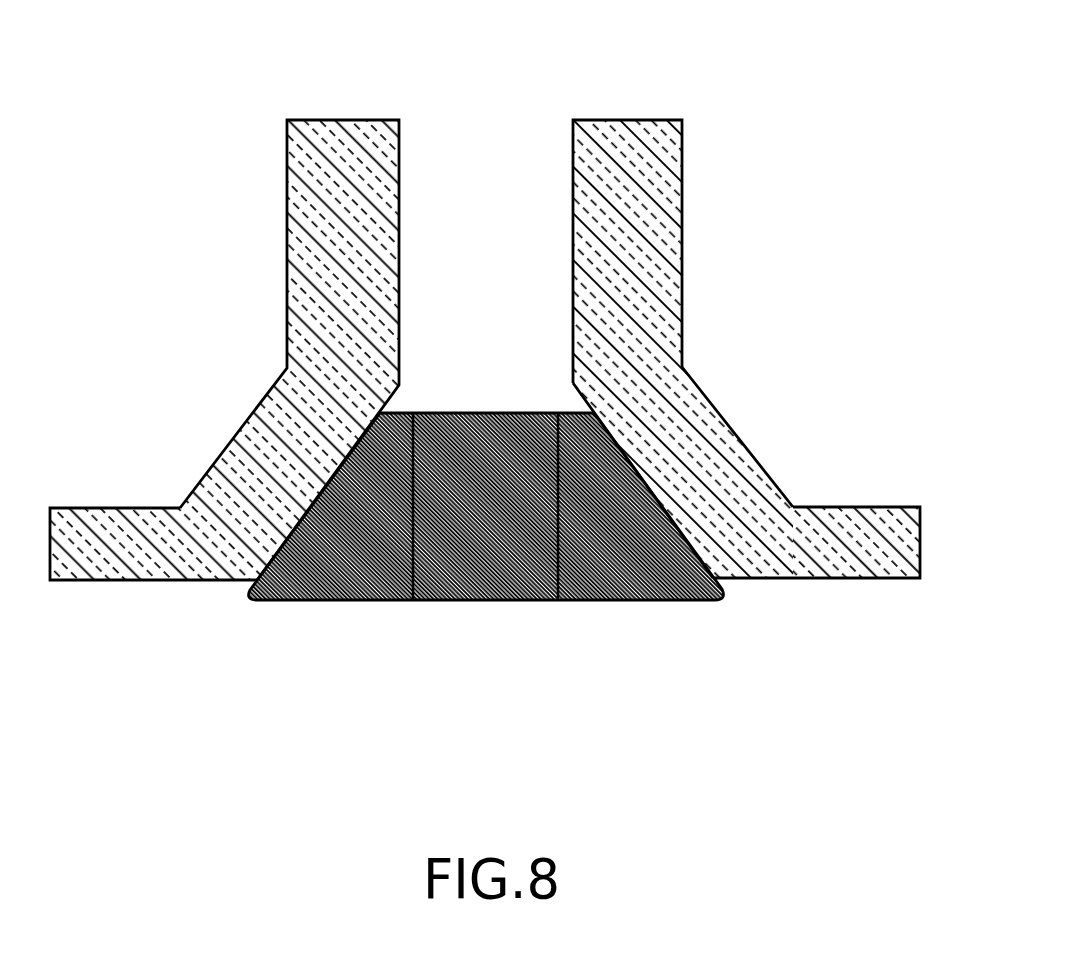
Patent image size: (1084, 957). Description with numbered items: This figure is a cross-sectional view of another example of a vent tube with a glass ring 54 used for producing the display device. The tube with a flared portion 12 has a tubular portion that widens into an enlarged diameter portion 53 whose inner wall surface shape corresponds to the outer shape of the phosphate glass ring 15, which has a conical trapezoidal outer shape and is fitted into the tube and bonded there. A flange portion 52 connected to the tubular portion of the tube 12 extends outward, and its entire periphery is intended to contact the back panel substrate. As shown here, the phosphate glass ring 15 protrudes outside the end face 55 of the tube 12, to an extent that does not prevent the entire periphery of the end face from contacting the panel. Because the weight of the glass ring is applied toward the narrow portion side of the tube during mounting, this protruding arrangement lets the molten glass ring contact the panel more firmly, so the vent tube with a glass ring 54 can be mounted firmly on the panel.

The vent tube with a glass ring 54 is at (485, 374).
The tube with a flared portion 12 is at (655, 252).
The enlarged diameter portion 53 is at (712, 433).
The flange portion 52 is at (857, 527).
The end face 55 is at (175, 583).
The phosphate glass ring 15 is at (662, 603).